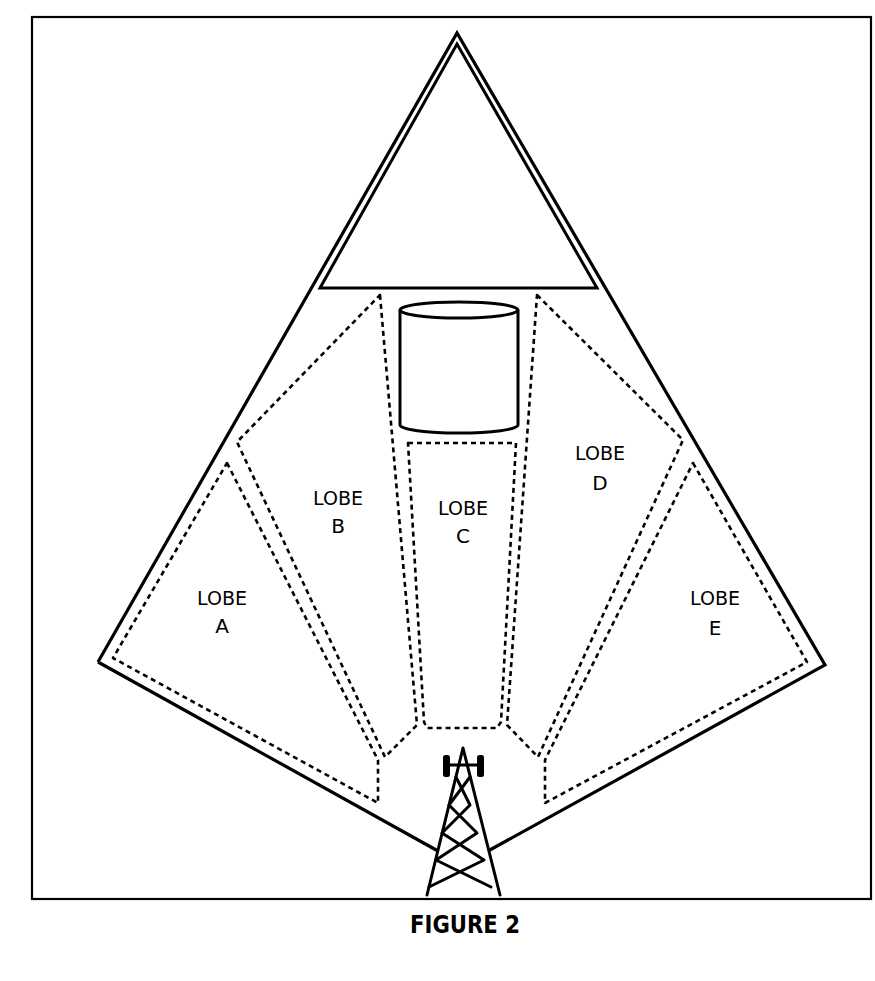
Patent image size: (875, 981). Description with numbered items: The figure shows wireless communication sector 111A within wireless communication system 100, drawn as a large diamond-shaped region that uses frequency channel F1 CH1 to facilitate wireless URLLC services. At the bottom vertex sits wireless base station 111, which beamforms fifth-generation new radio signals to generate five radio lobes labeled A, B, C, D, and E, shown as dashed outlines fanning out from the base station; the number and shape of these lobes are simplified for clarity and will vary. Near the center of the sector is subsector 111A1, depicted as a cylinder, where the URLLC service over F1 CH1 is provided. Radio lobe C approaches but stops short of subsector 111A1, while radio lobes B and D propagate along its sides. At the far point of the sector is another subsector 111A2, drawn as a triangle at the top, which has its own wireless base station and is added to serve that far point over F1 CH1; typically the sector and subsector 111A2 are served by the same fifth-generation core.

The wireless communication system 100 is at (160, 96).
The wireless base station 111 is at (491, 882).
The wireless communication sector 111A is at (630, 332).
The subsector 111A1 is at (459, 367).
The subsector 111A2 is at (458, 166).